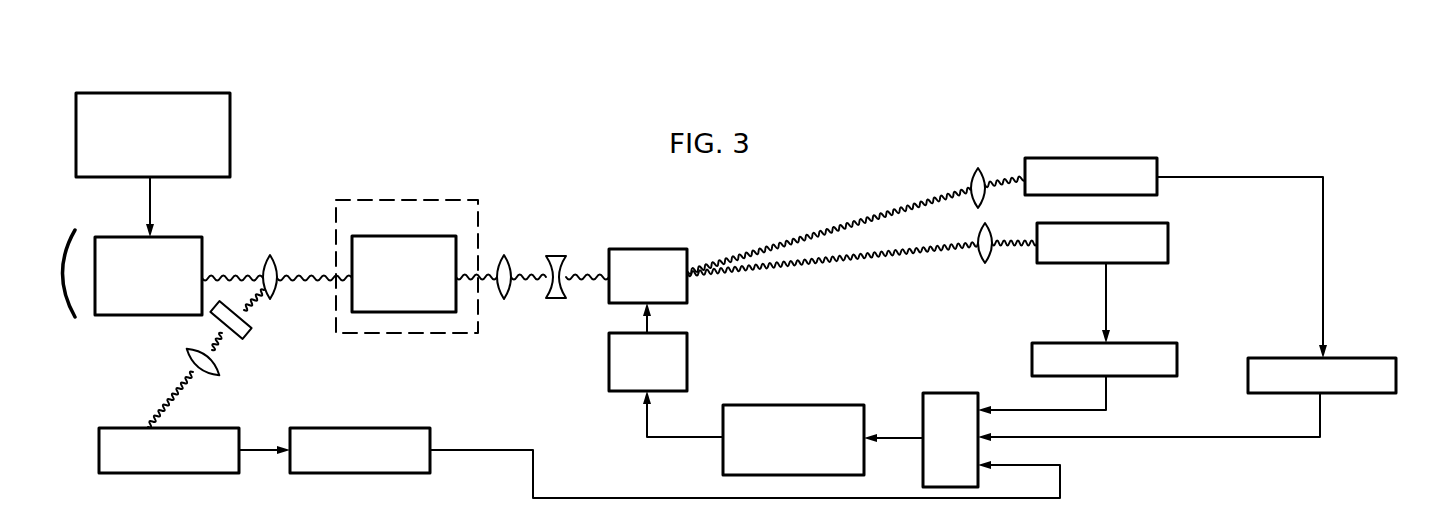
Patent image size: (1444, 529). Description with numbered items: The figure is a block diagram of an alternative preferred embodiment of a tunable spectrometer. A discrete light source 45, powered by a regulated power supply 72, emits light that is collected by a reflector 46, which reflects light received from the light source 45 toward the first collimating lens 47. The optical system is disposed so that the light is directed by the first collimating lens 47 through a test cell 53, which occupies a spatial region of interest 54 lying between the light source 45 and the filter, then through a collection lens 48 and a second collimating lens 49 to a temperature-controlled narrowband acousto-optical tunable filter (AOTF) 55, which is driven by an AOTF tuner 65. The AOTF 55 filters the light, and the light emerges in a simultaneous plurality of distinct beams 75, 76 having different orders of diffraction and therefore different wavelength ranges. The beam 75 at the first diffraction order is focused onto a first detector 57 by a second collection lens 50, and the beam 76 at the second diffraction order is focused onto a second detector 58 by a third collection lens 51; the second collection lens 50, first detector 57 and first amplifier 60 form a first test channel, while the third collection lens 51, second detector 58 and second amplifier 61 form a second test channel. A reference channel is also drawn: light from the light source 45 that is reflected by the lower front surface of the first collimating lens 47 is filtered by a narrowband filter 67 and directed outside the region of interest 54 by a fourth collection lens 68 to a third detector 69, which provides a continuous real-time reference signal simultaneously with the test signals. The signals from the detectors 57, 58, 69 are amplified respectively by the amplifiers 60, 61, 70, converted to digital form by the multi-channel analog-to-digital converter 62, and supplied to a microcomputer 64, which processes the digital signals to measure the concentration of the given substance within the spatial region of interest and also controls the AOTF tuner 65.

The light source 45 is at (183, 236).
The reflector 46 is at (75, 229).
The first collimating lens 47 is at (271, 254).
The collection lens 48 is at (505, 254).
The second collimating lens 49 is at (557, 255).
The second collection lens 50 is at (979, 262).
The third collection lens 51 is at (976, 167).
The test cell 53 is at (415, 236).
The region of interest 54 is at (418, 198).
The acousto-optical tunable filter (AOTF) 55 is at (650, 248).
The first detector 57 is at (1150, 222).
The second detector 58 is at (1120, 157).
The first amplifier 60 is at (1160, 342).
The second amplifier 61 is at (1375, 357).
The multi-channel analog-to-digital converter 62 is at (945, 392).
The microcomputer 64 is at (812, 404).
The AOTF tuner 65 is at (668, 333).
The narrowband filter 67 is at (251, 333).
The fourth collection lens 68 is at (221, 368).
The third detector 69 is at (196, 427).
The third amplifier 70 is at (388, 427).
The regulated power supply 72 is at (230, 122).
The beam 75 is at (848, 258).
The beam 76 is at (856, 222).